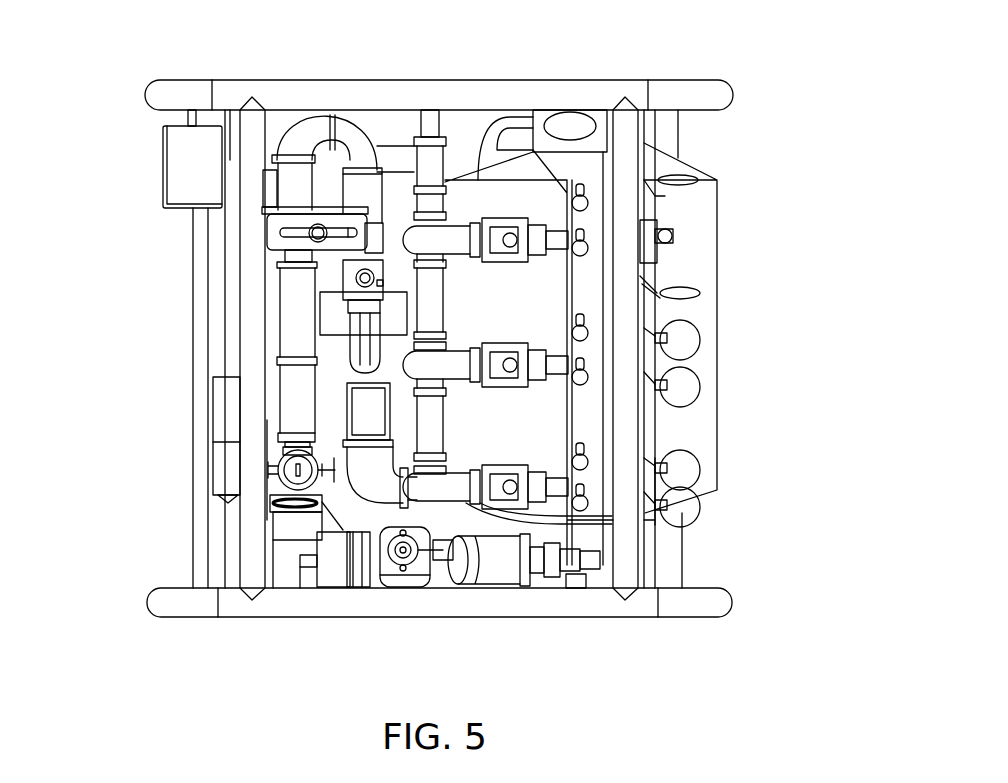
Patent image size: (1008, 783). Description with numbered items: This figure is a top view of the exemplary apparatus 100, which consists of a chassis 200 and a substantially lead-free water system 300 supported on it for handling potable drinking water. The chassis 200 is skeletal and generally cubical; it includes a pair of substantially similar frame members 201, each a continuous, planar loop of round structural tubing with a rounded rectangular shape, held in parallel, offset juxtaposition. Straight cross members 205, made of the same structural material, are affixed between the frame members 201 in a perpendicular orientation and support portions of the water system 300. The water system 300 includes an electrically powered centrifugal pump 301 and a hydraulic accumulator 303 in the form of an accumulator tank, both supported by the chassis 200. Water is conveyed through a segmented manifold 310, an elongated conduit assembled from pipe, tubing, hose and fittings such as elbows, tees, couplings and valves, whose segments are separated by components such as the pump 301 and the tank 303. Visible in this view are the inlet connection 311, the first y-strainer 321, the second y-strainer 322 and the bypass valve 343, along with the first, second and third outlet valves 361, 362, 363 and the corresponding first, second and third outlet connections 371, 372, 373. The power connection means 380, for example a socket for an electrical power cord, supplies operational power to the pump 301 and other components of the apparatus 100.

The apparatus 100 is at (722, 148).
The chassis 200 is at (728, 608).
The frame members 201 is at (634, 90).
The cross members 205 is at (243, 557).
The water system 300 is at (446, 156).
The pump 301 is at (233, 500).
The hydraulic accumulator 303 is at (707, 430).
The manifold 310 is at (433, 433).
The inlet connection 311 is at (335, 568).
The first y-strainer 321 is at (493, 572).
The second y-strainer 322 is at (293, 325).
The bypass valve 343 is at (348, 285).
The first outlet valve 361 is at (512, 472).
The second outlet valve 362 is at (512, 352).
The third outlet valve 363 is at (532, 250).
The first outlet connection 371 is at (653, 474).
The second outlet connection 372 is at (654, 340).
The third outlet connection 373 is at (652, 230).
The power connection means 380 is at (178, 160).